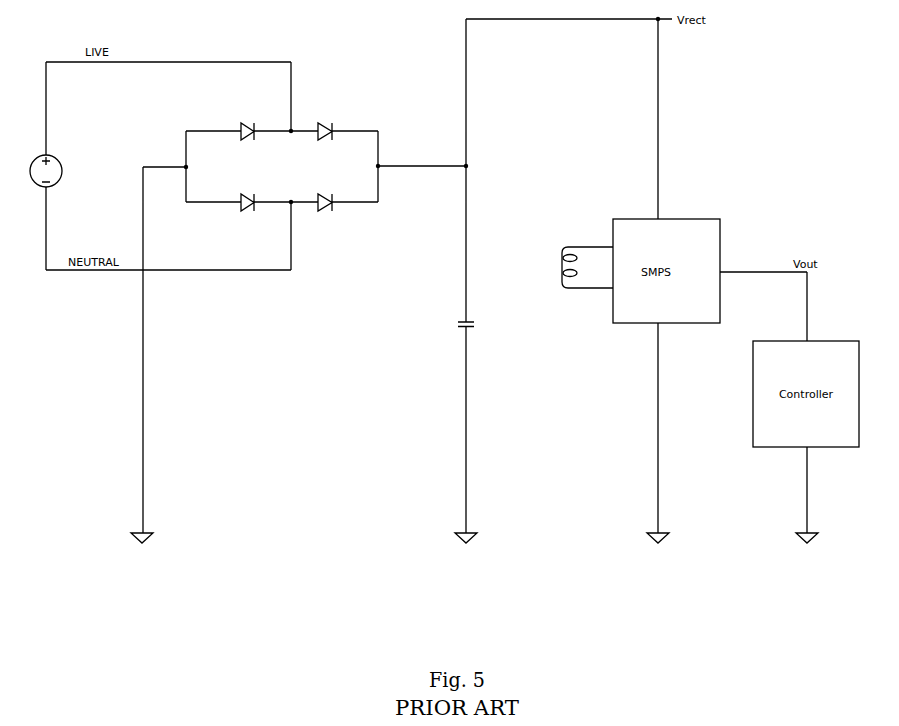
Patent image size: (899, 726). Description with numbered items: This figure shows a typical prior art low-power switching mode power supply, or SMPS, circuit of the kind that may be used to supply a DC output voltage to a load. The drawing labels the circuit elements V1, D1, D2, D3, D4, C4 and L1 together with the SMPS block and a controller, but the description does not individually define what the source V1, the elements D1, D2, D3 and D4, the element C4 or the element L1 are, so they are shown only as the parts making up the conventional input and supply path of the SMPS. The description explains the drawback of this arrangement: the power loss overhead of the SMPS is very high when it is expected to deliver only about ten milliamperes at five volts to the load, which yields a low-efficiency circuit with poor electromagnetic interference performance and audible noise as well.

The AC power source V1 is at (80, 166).
The rectifier diode D1 is at (247, 125).
The rectifier diode D2 is at (325, 125).
The rectifier diode D3 is at (247, 195).
The rectifier diode D4 is at (325, 195).
The smoothing capacitor C4 is at (471, 317).
The inductor L1 is at (577, 267).